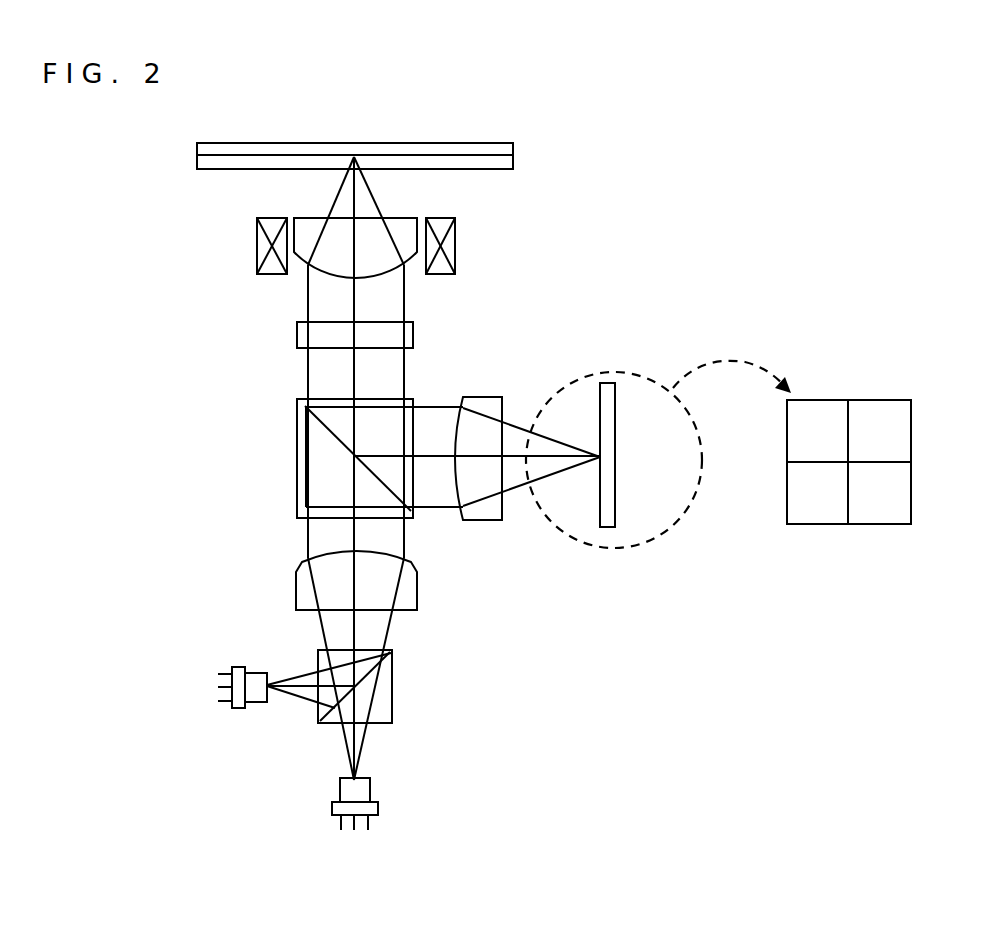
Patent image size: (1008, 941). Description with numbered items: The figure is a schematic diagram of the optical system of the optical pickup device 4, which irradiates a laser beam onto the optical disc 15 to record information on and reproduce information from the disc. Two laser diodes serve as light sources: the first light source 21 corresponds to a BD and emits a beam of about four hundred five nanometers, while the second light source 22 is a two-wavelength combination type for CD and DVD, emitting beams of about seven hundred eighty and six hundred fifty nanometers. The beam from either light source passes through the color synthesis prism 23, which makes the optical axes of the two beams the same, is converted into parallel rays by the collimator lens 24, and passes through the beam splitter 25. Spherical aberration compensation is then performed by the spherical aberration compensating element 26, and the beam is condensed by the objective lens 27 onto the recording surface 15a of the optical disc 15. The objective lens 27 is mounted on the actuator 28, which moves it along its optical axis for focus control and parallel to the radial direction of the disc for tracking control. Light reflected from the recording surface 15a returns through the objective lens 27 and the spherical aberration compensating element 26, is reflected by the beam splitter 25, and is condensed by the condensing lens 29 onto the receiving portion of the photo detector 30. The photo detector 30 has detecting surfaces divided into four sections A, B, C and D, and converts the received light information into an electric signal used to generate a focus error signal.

The optical pickup device 4 is at (637, 213).
The optical disc 15 is at (197, 148).
The recording surface 15a is at (425, 169).
The first light source 21 is at (332, 805).
The second light source 22 is at (232, 668).
The color synthesis prism 23 is at (392, 694).
The collimator lens 24 is at (417, 590).
The beam splitter 25 is at (297, 455).
The spherical aberration compensating element 26 is at (297, 340).
The objective lens 27 is at (326, 281).
The actuator 28 is at (257, 255).
The condensing lens 29 is at (499, 528).
The photo detector 30 is at (617, 508).